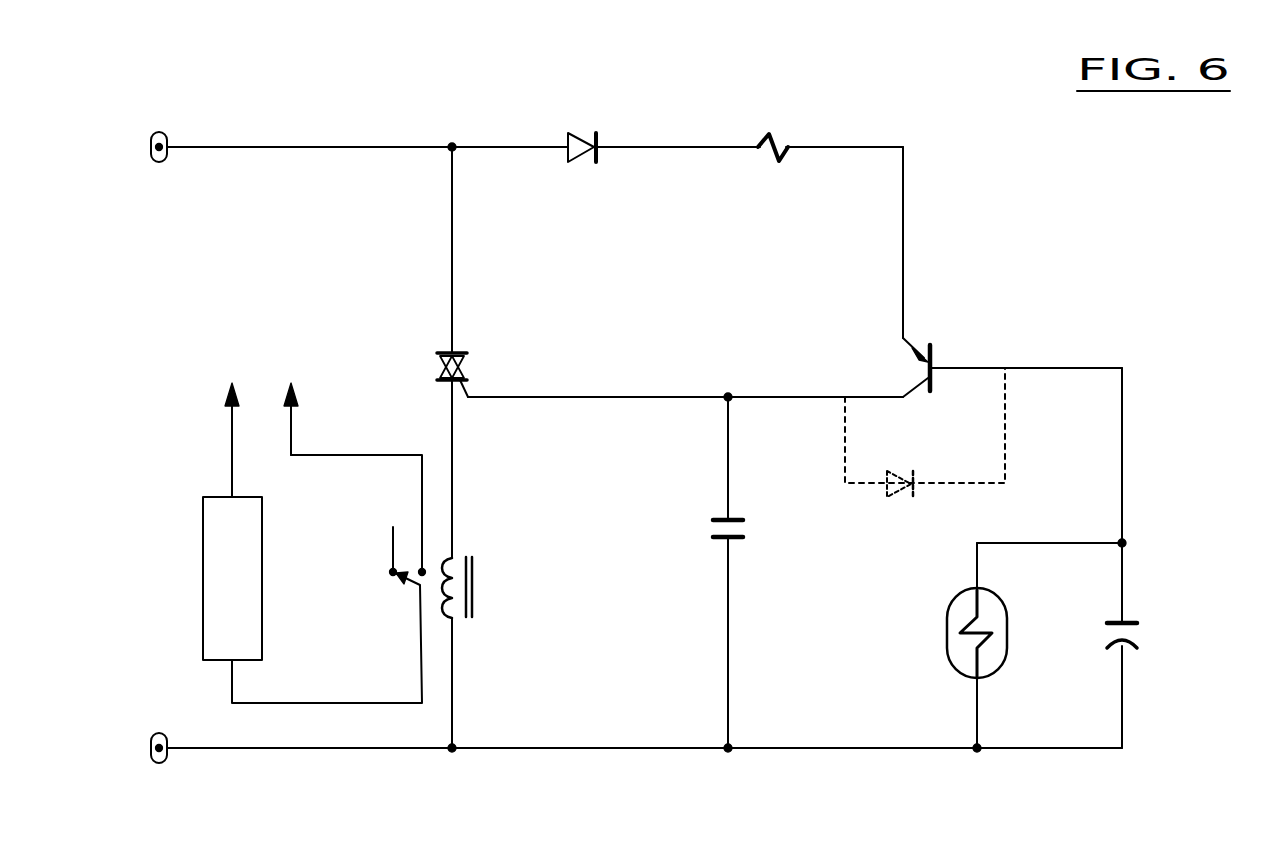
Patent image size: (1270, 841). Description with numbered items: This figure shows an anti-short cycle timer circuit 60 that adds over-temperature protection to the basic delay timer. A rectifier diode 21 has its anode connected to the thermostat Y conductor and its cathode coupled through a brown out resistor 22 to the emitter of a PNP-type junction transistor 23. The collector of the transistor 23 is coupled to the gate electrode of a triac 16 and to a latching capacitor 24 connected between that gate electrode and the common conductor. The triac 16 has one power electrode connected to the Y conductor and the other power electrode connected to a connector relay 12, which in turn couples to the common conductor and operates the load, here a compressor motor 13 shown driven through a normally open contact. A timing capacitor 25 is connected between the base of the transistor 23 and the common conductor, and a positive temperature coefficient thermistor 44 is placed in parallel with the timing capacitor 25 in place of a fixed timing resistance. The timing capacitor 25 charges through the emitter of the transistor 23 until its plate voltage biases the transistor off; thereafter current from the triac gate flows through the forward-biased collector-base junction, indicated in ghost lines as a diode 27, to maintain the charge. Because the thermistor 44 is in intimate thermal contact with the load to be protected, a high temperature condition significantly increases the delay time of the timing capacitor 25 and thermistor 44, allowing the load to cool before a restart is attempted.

The control circuit 60 is at (1170, 148).
The relay 12 is at (489, 562).
The compressor motor 13 is at (267, 559).
The triac 16 is at (478, 358).
The rectifier diode 21 is at (597, 104).
The brown out resistor 22 is at (786, 104).
The PNP-type junction transistor 23 is at (936, 361).
The latching capacitor 24 is at (735, 508).
The timing capacitor 25 is at (1152, 645).
The diode 27 is at (897, 470).
The positive temperature coefficient thermistor 44 is at (1010, 641).